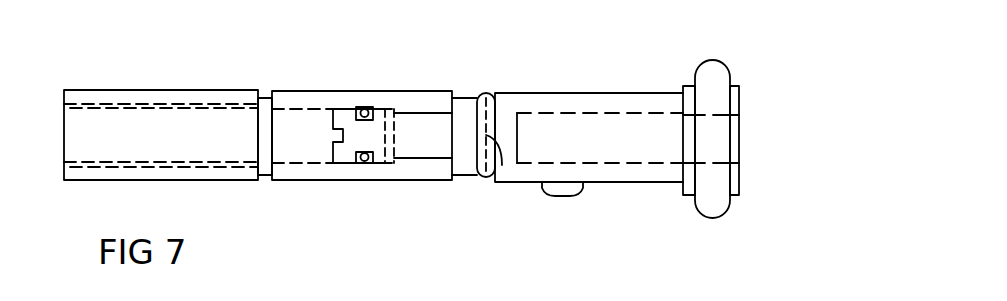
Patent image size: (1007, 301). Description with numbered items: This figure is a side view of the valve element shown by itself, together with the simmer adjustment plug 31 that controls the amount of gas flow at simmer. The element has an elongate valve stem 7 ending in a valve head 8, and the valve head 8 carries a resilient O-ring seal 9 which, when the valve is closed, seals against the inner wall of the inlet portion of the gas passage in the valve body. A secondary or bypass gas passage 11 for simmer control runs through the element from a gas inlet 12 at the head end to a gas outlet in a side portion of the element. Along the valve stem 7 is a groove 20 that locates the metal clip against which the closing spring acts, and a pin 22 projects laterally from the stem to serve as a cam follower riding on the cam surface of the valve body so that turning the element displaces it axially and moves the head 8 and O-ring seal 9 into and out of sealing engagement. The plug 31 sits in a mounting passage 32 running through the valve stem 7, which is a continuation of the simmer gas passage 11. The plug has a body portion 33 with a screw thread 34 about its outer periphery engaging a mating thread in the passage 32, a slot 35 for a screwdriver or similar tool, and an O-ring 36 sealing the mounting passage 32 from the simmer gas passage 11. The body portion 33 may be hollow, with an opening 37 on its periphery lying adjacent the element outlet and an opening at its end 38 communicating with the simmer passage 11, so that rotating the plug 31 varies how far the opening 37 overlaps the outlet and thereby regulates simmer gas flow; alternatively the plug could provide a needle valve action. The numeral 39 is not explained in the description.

The valve stem 7 is at (348, 73).
The valve head 8 is at (735, 181).
The resilient O-ring seal 9 is at (719, 75).
The bypass gas passage 11 is at (628, 148).
The gas inlet 12 is at (740, 140).
The groove 20 is at (263, 92).
The pin 22 is at (566, 192).
The simmer adjustment plug 31 is at (408, 143).
The mounting passage 32 is at (160, 112).
The body portion 33 is at (482, 166).
The screw thread 34 is at (427, 98).
The slot 35 is at (340, 134).
The O-ring 36 is at (363, 166).
The opening 37 is at (468, 100).
The end opening 38 is at (502, 165).
The groove 39 is at (481, 120).